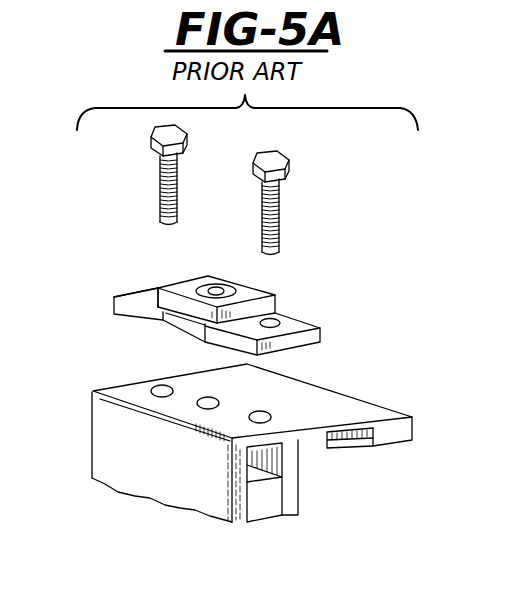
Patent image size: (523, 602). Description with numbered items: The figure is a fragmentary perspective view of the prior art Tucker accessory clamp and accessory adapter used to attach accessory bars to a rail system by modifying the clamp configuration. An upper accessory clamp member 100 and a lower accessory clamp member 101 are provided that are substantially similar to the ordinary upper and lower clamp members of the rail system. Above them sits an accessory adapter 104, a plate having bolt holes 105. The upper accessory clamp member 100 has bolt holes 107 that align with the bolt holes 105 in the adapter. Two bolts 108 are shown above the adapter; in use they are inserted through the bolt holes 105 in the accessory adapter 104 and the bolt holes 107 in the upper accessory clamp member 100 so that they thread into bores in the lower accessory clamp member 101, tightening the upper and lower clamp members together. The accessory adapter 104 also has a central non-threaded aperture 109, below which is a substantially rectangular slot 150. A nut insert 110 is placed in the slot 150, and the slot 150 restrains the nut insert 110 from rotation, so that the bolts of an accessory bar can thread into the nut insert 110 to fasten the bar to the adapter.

The upper accessory clamp member 100 is at (350, 448).
The lower accessory clamp member 101 is at (263, 512).
The accessory adapter 104 is at (321, 330).
The bolt holes 105 is at (148, 297).
The bolt holes 107 is at (150, 391).
The bolts 108 is at (154, 152).
The central non-threaded aperture 109 is at (219, 286).
The nut insert 110 is at (166, 325).
The substantially rectangular slot 150 is at (185, 320).